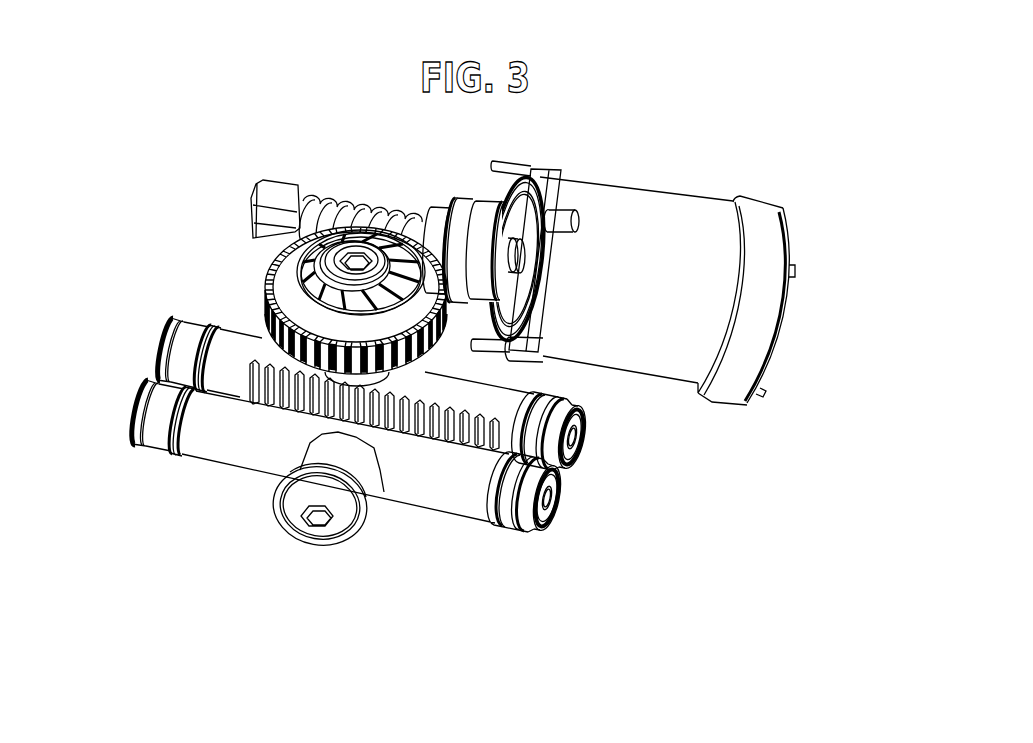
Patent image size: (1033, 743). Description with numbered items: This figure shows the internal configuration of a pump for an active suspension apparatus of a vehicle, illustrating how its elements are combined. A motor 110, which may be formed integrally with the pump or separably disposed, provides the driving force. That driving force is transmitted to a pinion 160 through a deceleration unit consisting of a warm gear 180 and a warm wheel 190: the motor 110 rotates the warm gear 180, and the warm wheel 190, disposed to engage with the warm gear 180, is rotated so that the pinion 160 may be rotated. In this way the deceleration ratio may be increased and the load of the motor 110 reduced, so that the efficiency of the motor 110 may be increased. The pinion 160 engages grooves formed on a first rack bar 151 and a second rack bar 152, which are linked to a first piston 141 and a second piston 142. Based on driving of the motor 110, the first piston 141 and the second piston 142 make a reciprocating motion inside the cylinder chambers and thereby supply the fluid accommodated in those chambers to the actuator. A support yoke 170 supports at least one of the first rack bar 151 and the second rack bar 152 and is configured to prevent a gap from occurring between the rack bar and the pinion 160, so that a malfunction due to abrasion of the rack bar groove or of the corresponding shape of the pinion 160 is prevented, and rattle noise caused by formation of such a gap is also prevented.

The motor 110 is at (643, 213).
The first piston 141 is at (193, 322).
The second piston 142 is at (155, 443).
The first rack bar 151 is at (243, 330).
The second rack bar 152 is at (237, 452).
The pinion 160 is at (378, 420).
The support yoke 170 is at (328, 538).
The warm gear 180 is at (327, 200).
The warm wheel 190 is at (268, 263).